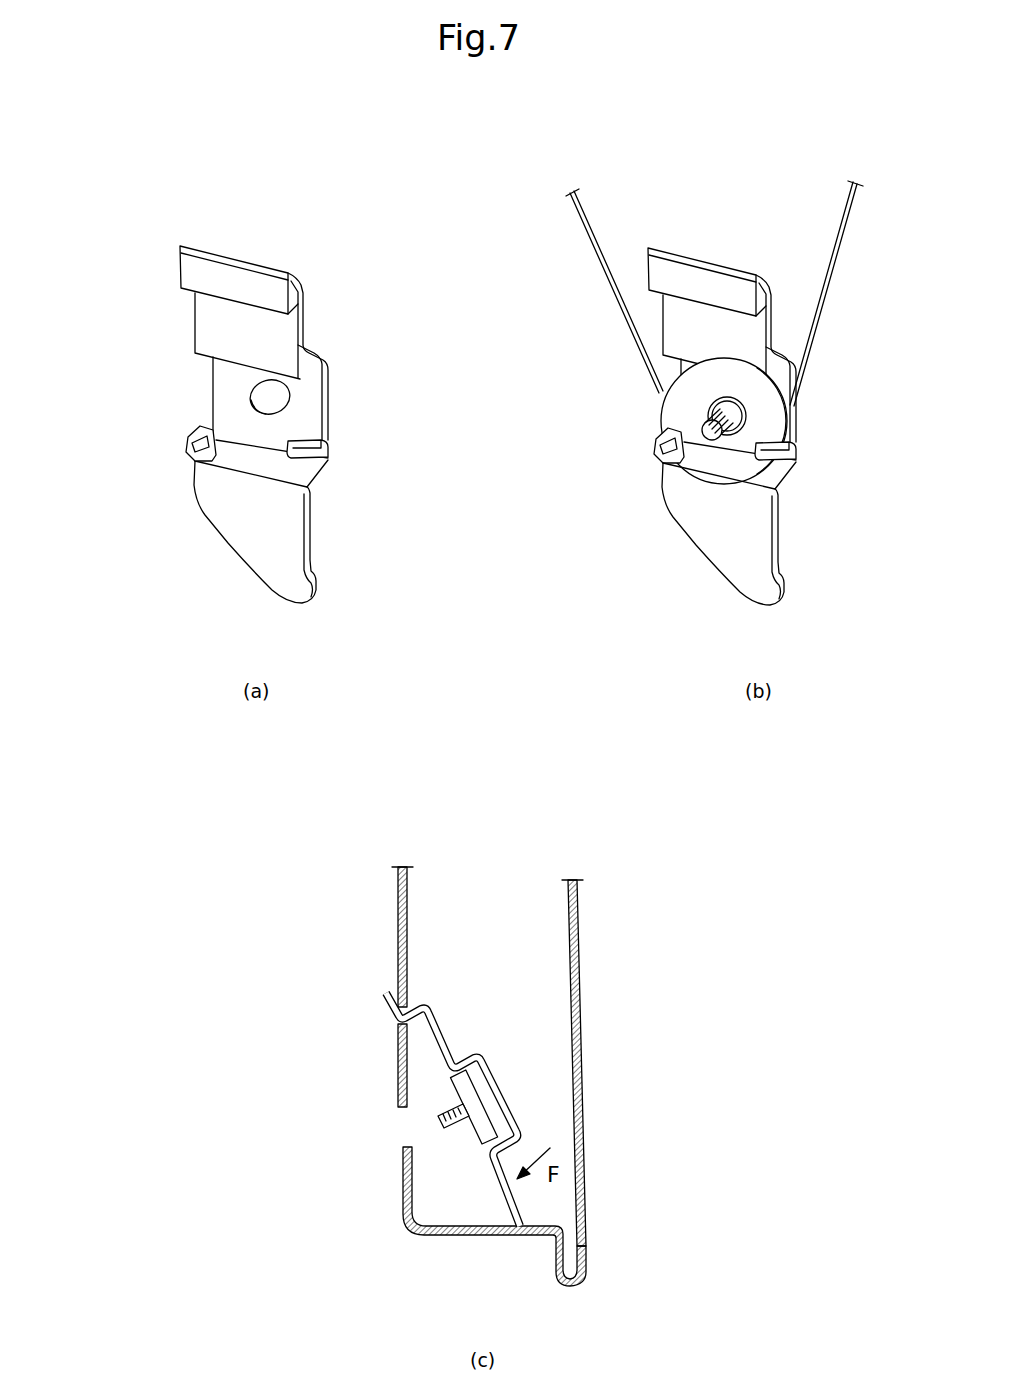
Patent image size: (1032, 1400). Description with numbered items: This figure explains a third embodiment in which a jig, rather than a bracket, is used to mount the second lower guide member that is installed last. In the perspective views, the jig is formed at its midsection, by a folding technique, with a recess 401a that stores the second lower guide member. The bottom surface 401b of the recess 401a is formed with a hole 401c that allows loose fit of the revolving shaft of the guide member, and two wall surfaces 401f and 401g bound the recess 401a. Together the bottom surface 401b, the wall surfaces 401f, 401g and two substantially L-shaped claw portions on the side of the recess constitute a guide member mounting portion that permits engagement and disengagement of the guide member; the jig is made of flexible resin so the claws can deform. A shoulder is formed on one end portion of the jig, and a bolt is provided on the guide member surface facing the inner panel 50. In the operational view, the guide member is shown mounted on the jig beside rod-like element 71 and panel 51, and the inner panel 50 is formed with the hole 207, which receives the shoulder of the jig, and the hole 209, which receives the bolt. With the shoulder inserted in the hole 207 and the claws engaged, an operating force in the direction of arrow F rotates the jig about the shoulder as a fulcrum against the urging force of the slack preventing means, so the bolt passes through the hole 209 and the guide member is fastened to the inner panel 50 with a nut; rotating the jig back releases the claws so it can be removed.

The recess 401a is at (228, 372).
The bottom surface 401b is at (230, 392).
The hole 401c is at (290, 398).
The wall surface 401f is at (310, 360).
The wall surface 401g is at (290, 477).
The rod 71 is at (817, 332).
The wall 51 is at (578, 947).
The inner panel 50 is at (408, 1225).
The hole 207 is at (398, 1023).
The hole 209 is at (402, 1148).